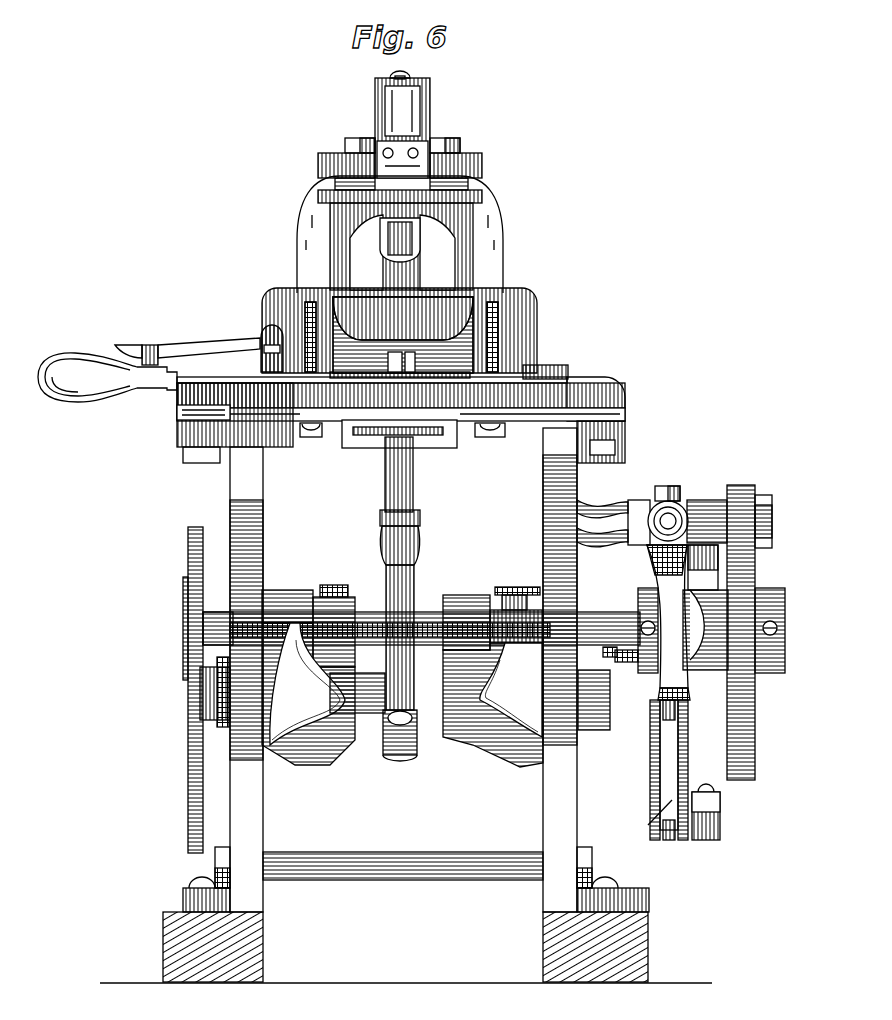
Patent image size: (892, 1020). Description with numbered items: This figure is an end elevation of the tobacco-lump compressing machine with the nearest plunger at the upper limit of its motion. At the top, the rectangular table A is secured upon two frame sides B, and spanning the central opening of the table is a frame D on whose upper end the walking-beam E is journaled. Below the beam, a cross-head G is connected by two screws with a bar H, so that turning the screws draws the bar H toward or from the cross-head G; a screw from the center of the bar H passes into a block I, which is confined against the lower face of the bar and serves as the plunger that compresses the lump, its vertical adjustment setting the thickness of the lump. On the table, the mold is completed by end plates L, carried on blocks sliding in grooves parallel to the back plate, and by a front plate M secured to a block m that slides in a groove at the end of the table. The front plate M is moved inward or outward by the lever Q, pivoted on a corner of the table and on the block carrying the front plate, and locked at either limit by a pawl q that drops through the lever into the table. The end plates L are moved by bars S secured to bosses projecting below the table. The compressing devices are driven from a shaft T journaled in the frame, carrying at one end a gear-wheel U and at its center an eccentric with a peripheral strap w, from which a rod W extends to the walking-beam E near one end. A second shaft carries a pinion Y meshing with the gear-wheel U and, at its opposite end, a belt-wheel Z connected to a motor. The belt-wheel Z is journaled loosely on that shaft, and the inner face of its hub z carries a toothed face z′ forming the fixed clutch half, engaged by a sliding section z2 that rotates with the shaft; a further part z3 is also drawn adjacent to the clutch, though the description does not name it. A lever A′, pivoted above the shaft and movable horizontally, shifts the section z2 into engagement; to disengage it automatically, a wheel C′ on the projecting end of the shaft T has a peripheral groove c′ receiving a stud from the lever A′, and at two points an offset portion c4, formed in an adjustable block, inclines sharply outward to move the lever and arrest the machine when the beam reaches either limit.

The top clamp block F is at (420, 122).
The cross-head G is at (482, 172).
The bar H is at (318, 197).
The frame D is at (415, 234).
The block I is at (458, 276).
The walking-beam E is at (505, 335).
The vertical plate L is at (305, 313).
The vertical plate M is at (378, 359).
The block m is at (424, 358).
The lever Q is at (107, 377).
The pawl q is at (150, 345).
The table A is at (401, 420).
The bar S is at (328, 437).
The rod W is at (410, 492).
The peripheral strap w is at (386, 574).
The pinion Y is at (203, 630).
The gear-wheel U is at (188, 755).
The shaft T is at (368, 705).
The frame side B is at (258, 548).
The lever A′ is at (682, 508).
The belt-wheel Z is at (750, 590).
The toothed face z′ is at (690, 622).
The hub z is at (705, 607).
The clutch section z2 is at (642, 610).
The key z3 is at (626, 660).
The wheel C′ is at (650, 780).
The peripheral groove c′ is at (650, 812).
The offset portion c4 is at (720, 810).